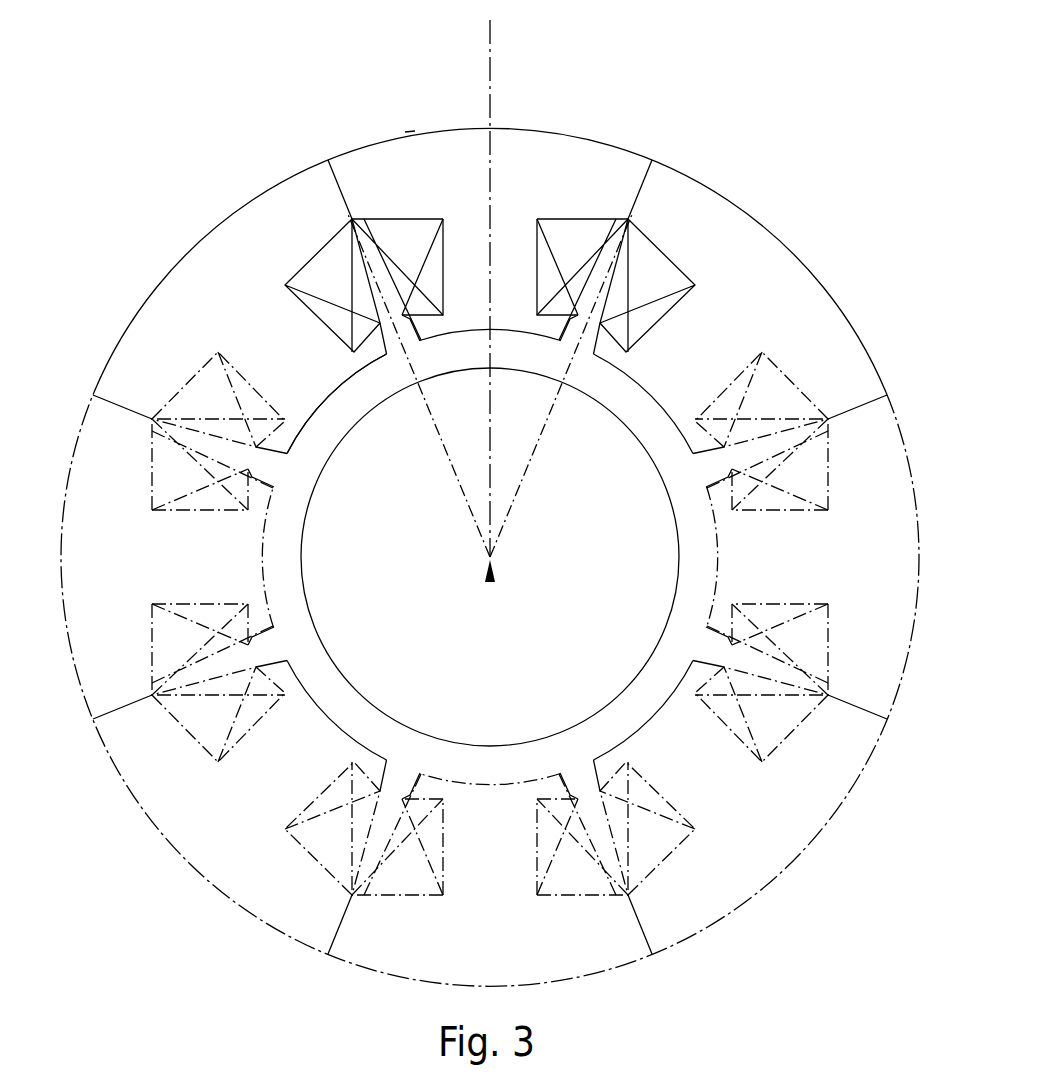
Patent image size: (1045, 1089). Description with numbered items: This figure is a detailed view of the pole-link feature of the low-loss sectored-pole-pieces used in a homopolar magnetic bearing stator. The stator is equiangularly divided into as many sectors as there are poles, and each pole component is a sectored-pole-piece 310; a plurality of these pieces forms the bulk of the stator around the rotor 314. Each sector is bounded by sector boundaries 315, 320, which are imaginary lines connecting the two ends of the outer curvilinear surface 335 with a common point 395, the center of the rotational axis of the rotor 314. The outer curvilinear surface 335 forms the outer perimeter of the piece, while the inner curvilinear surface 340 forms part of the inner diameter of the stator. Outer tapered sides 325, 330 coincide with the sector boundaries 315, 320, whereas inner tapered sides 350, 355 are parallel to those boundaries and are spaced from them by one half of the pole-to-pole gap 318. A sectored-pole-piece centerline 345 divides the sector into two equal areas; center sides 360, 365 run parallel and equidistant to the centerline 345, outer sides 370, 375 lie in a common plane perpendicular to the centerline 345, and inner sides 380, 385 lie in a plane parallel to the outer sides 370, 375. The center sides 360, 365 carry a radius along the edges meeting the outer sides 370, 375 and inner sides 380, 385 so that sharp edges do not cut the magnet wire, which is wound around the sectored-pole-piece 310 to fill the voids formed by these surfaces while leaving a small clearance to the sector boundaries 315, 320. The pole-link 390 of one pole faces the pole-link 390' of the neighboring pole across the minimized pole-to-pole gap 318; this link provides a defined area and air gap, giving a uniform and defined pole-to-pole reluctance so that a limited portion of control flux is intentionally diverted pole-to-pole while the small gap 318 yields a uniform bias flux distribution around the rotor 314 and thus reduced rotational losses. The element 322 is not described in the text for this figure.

The sectored-pole-piece 310 is at (601, 140).
The rotor 314 is at (680, 548).
The sector boundary 315 is at (583, 300).
The pole-to-pole gap 318 is at (361, 366).
The sector boundary 320 is at (337, 233).
The core section 322 is at (522, 358).
The outer tapered side 325 is at (648, 190).
The outer tapered side 330 is at (337, 198).
The outer curvilinear surface 335 is at (410, 132).
The inner curvilinear surface 340 is at (451, 333).
The sectored-pole-piece centerline 345 is at (493, 35).
The inner tapered side 350 is at (618, 338).
The inner tapered side 355 is at (403, 337).
The center side 360 is at (537, 242).
The center side 365 is at (447, 244).
The outer side 370 is at (640, 232).
The outer side 375 is at (388, 218).
The inner side 380 is at (598, 276).
The inner side 385 is at (370, 275).
The pole-link 390 is at (514, 168).
The pole-link 390' is at (251, 277).
The common point 395 is at (492, 580).